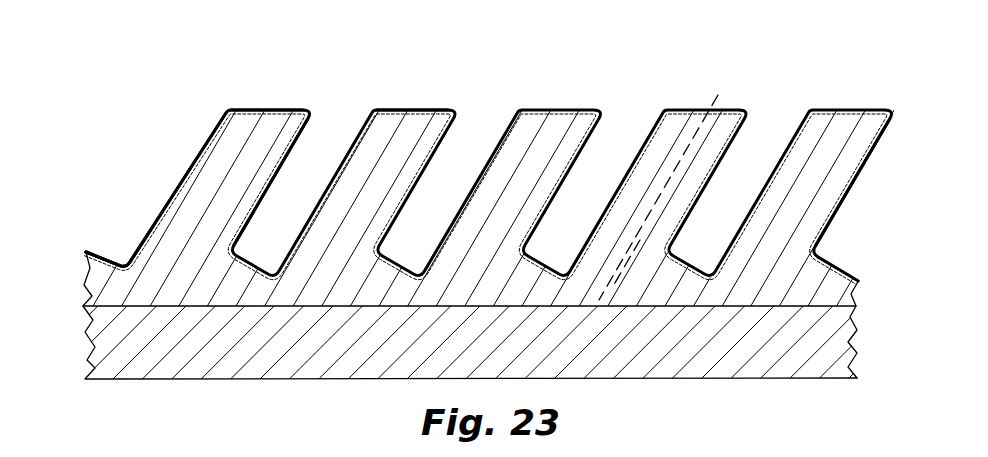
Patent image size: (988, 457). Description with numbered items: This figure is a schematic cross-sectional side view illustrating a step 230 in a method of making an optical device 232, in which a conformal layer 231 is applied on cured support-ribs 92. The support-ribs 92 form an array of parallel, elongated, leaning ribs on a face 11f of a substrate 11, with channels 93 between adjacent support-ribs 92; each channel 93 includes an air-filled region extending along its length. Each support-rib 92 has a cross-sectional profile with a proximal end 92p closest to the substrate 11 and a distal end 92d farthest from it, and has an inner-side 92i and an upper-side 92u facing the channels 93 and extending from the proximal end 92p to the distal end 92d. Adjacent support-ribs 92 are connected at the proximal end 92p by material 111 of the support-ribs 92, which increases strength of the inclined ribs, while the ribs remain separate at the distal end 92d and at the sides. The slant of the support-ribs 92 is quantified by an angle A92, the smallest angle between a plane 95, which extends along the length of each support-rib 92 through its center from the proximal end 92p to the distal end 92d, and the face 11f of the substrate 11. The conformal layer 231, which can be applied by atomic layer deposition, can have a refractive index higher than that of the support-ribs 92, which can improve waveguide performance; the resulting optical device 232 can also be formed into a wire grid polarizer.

The substrate 11 is at (488, 353).
The material of the support-ribs 111 is at (573, 298).
The face of the substrate 11f is at (813, 312).
The support-rib 92 is at (377, 207).
The distal end 92d is at (242, 117).
The upper-side 92u is at (203, 158).
The inner-side 92i is at (235, 240).
The proximal end 92p is at (157, 283).
The channel 93 is at (486, 199).
The plane 95 is at (727, 80).
The angle A92 is at (612, 278).
The step 230 is at (868, 223).
The conformal layer 231 is at (405, 111).
The optical device 232 is at (128, 128).